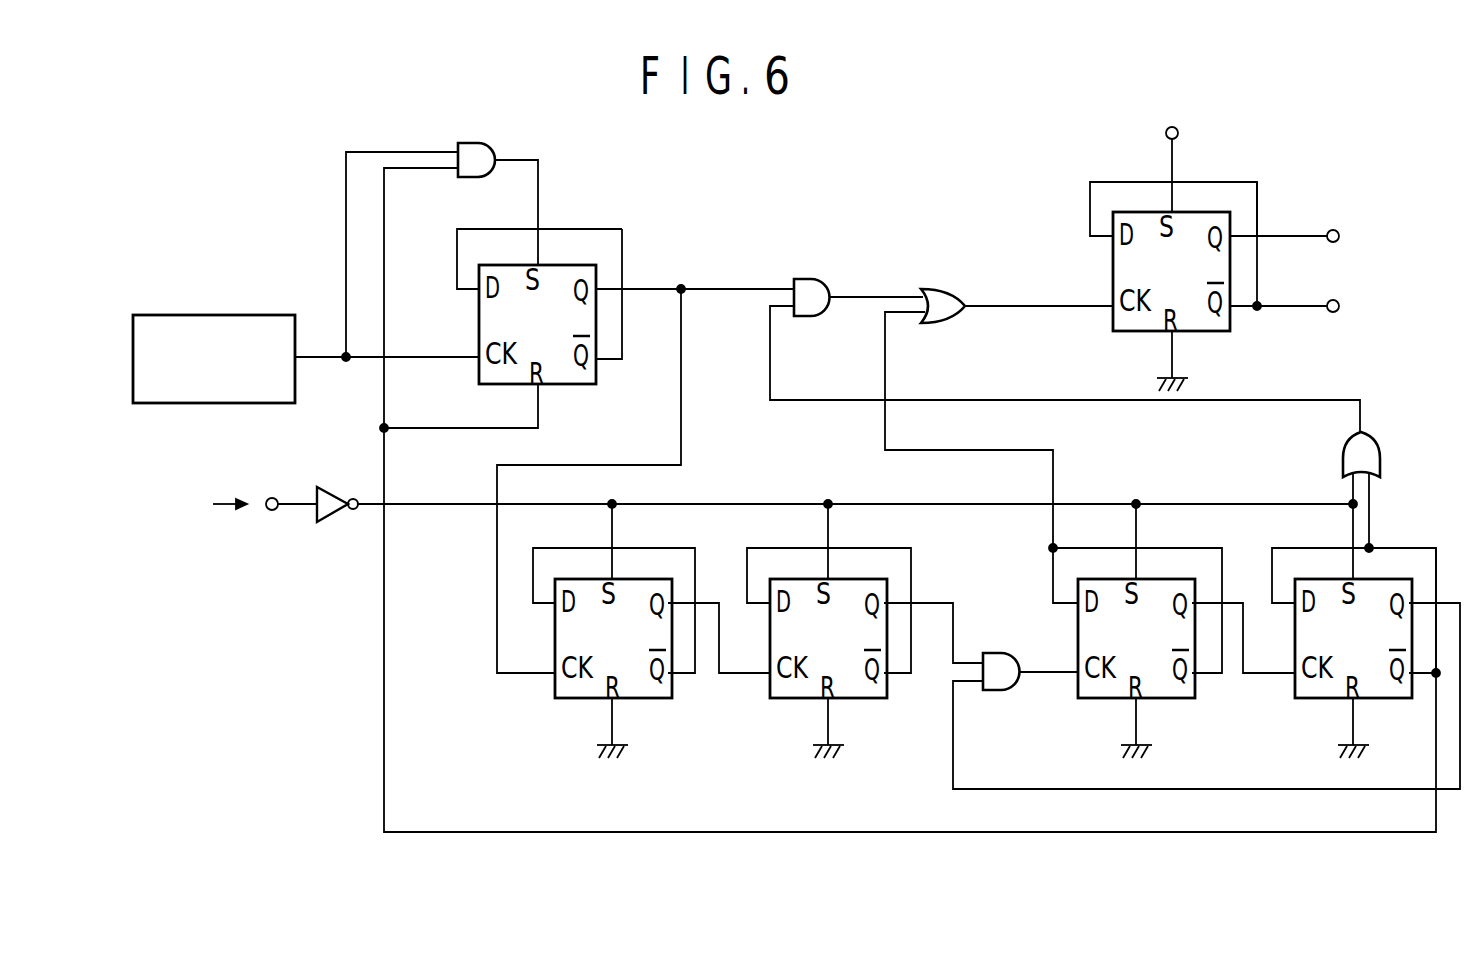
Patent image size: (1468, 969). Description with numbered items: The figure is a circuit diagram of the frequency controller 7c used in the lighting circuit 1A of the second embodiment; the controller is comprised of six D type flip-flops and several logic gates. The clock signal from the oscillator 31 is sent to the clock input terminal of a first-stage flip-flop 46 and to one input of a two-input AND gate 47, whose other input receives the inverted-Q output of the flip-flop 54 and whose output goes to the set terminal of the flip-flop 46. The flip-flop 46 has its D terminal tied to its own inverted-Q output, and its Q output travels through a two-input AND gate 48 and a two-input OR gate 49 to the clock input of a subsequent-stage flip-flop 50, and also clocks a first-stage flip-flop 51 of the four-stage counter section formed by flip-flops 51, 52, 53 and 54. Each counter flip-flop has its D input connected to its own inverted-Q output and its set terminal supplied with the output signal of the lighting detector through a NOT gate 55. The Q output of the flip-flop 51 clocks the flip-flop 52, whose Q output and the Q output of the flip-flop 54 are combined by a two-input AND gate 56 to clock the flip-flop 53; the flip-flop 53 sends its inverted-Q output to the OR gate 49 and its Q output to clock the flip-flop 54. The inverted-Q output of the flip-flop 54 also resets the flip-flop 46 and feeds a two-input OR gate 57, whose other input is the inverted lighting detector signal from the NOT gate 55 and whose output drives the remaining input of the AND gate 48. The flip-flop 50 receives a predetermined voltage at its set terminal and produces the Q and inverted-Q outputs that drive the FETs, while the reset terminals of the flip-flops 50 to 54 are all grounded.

The lighting circuit 1A is at (1036, 141).
The frequency controller 7c is at (901, 218).
The oscillator 31 is at (208, 315).
The flip-flop 46 is at (479, 319).
The two-input AND gate 47 is at (491, 143).
The two-input AND gate 48 is at (810, 279).
The two-input OR gate 49 is at (950, 291).
The flip-flop 50 is at (1213, 212).
The flip-flop 51 is at (563, 700).
The flip-flop 52 is at (780, 700).
The flip-flop 53 is at (1187, 700).
The flip-flop 54 is at (1399, 578).
The NOT gate 55 is at (326, 524).
The two-input AND gate 56 is at (1001, 690).
The two-input OR gate 57 is at (1380, 450).